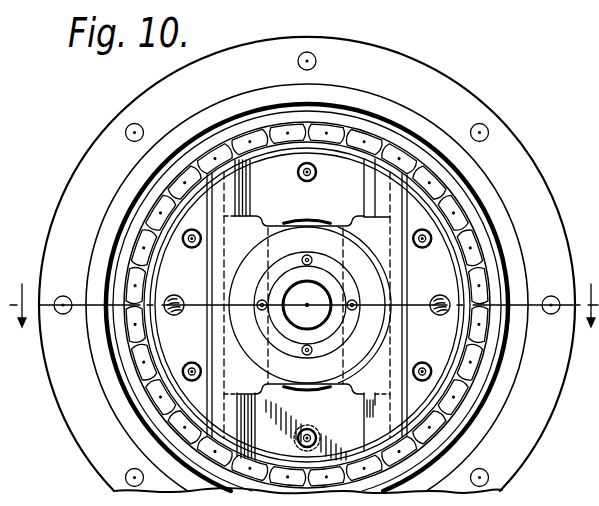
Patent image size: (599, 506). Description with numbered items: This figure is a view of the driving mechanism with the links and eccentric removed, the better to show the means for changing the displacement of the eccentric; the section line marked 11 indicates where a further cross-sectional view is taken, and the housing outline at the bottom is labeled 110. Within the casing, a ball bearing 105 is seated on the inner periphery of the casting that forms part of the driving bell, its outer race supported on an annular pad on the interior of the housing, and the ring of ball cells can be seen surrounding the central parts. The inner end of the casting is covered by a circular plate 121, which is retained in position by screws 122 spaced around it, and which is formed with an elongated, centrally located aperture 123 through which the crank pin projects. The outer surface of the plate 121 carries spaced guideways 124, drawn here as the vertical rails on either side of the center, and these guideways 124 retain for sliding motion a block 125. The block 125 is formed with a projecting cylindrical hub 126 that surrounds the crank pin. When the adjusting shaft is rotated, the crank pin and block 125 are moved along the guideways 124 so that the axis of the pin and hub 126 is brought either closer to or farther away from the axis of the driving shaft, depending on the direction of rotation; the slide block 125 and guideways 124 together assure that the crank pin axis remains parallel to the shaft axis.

The ball bearing 105 is at (139, 357).
The housing 110 is at (307, 271).
The circular plate 121 is at (307, 310).
The screws 122 is at (423, 362).
The elongated centrally located aperture 123 is at (309, 218).
The guideways 124 is at (427, 275).
The block 125 is at (249, 268).
The projecting cylindrical hub 126 is at (309, 278).
The section line 11- 11 is at (304, 321).